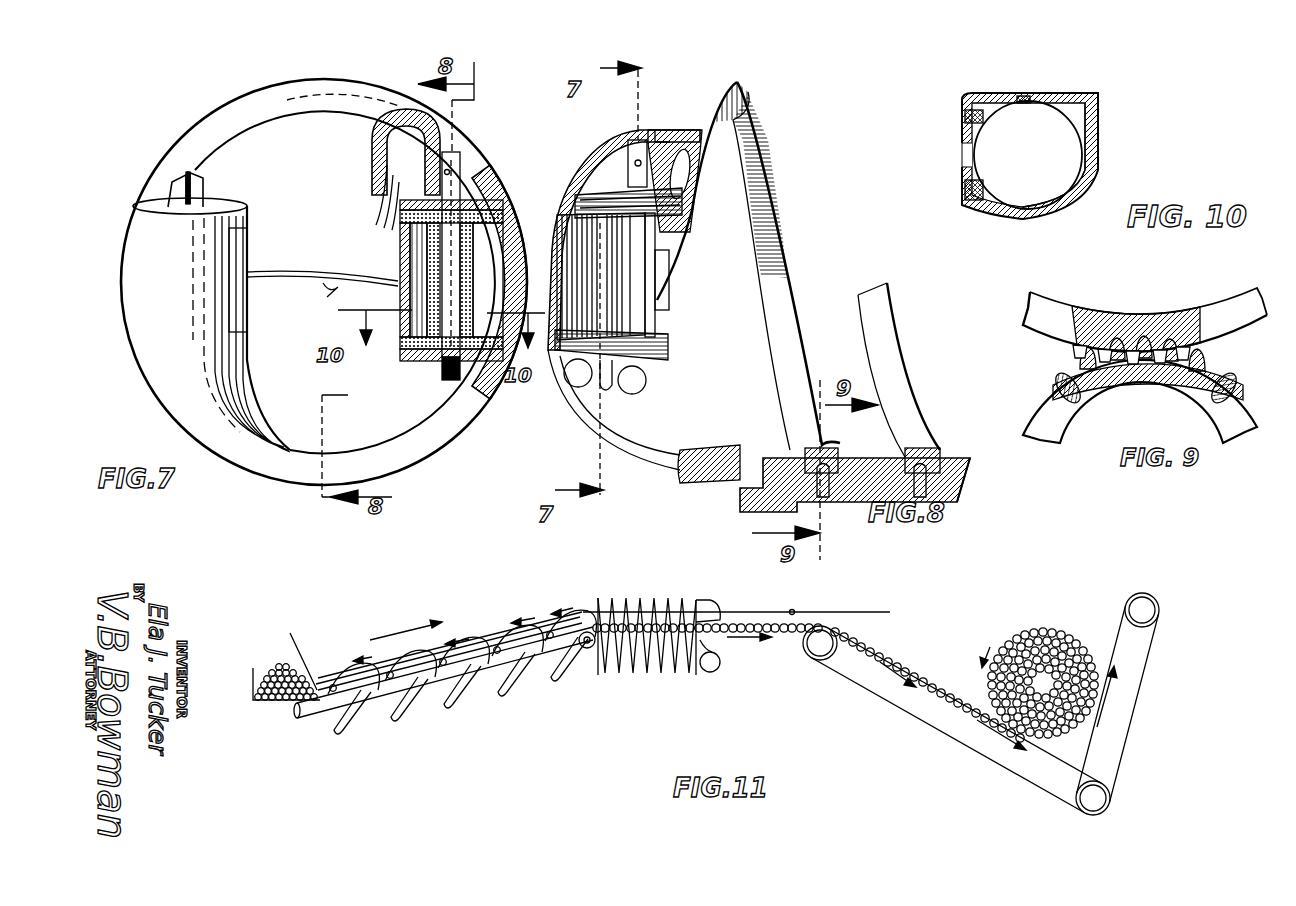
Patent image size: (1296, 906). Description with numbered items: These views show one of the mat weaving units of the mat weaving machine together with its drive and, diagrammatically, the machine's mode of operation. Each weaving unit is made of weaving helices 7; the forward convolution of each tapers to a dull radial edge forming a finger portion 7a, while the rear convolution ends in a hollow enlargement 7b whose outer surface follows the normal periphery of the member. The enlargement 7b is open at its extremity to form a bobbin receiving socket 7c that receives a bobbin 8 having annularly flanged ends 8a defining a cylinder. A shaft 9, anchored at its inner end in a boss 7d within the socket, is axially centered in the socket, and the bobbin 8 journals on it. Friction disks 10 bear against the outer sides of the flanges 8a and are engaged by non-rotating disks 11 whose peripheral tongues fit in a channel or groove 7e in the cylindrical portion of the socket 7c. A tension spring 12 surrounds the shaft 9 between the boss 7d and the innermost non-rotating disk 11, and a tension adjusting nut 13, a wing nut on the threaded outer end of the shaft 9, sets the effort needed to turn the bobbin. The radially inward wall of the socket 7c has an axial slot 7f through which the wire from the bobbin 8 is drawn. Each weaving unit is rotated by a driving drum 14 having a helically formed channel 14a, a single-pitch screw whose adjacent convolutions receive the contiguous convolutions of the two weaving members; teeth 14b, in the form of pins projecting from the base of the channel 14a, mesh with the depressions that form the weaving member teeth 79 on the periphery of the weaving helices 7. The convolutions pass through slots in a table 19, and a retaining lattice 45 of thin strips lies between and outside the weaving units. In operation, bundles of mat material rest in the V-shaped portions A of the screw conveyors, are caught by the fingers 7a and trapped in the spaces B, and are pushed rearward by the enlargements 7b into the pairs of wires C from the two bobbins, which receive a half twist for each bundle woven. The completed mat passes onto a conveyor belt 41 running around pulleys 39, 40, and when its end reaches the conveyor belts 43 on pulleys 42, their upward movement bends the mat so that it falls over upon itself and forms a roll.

In FIG. 7, the weaving helix 7 is at (183, 146).
In FIG. 8, the weaving helix 7 is at (867, 300).
In FIG. 10, the weaving helix 7 is at (1095, 96).
In FIG. 9, the weaving helix 7 is at (1050, 318).
In FIG. 11, the weaving helix 7 is at (650, 606).
In FIG. 11, the finger portion 7a is at (600, 598).
In FIG. 7, the hollow enlargement 7b is at (262, 215).
In FIG. 8, the hollow enlargement 7b is at (690, 180).
In FIG. 10, the hollow enlargement 7b is at (1100, 141).
In FIG. 11, the hollow enlargement 7b is at (705, 606).
In FIG. 7, the bobbin receiving socket 7c is at (400, 204).
In FIG. 8, the bobbin receiving socket 7c is at (700, 242).
In FIG. 10, the bobbin receiving socket 7c is at (1100, 176).
In FIG. 8, the boss 7d is at (662, 138).
In FIG. 8, the channel or groove 7e is at (672, 296).
In FIG. 10, the channel or groove 7e is at (1020, 98).
In FIG. 7, the slot 7f is at (252, 300).
In FIG. 10, the slot 7f is at (965, 152).
In FIG. 7, the bobbin 8 is at (474, 250).
In FIG. 8, the bobbin 8 is at (640, 267).
In FIG. 7, the annularly flanged ends 8a is at (470, 225).
In FIG. 8, the annularly flanged ends 8a is at (640, 242).
In FIG. 8, the bobbin shaft 9 is at (627, 152).
In FIG. 7, the friction disk 10 is at (425, 226).
In FIG. 8, the friction disk 10 is at (660, 226).
In FIG. 7, the non-rotating disk 11 is at (478, 205).
In FIG. 8, the non-rotating disk 11 is at (665, 212).
In FIG. 7, the tension spring 12 is at (405, 214).
In FIG. 7, the tension adjusting nut 13 is at (204, 192).
In FIG. 8, the tension adjusting nut 13 is at (570, 380).
In FIG. 8, the driving drum 14 is at (950, 468).
In FIG. 9, the driving drum 14 is at (1140, 370).
In FIG. 8, the helically formed channel 14a is at (942, 455).
In FIG. 9, the helically formed channel 14a is at (1205, 368).
In FIG. 8, the teeth 14b is at (960, 492).
In FIG. 9, the teeth 14b is at (1128, 350).
In FIG. 11, the table 19 is at (718, 670).
In FIG. 11, the pulley 39 is at (817, 648).
In FIG. 11, the pulley 40 is at (1078, 797).
In FIG. 11, the conveyor belt 41 is at (897, 703).
In FIG. 11, the pulley 42 is at (1141, 606).
In FIG. 11, the conveyor belt 43 is at (1113, 645).
In FIG. 11, the retaining lattice 45 is at (760, 612).
In FIG. 8, the pin 79 is at (921, 466).
In FIG. 9, the pin 79 is at (1090, 345).
In FIG. 11, the V-shaped portions A is at (470, 654).
In FIG. 11, the spaces B is at (622, 600).
In FIG. 7, the wires C is at (300, 272).
In FIG. 11, the wires C is at (720, 625).